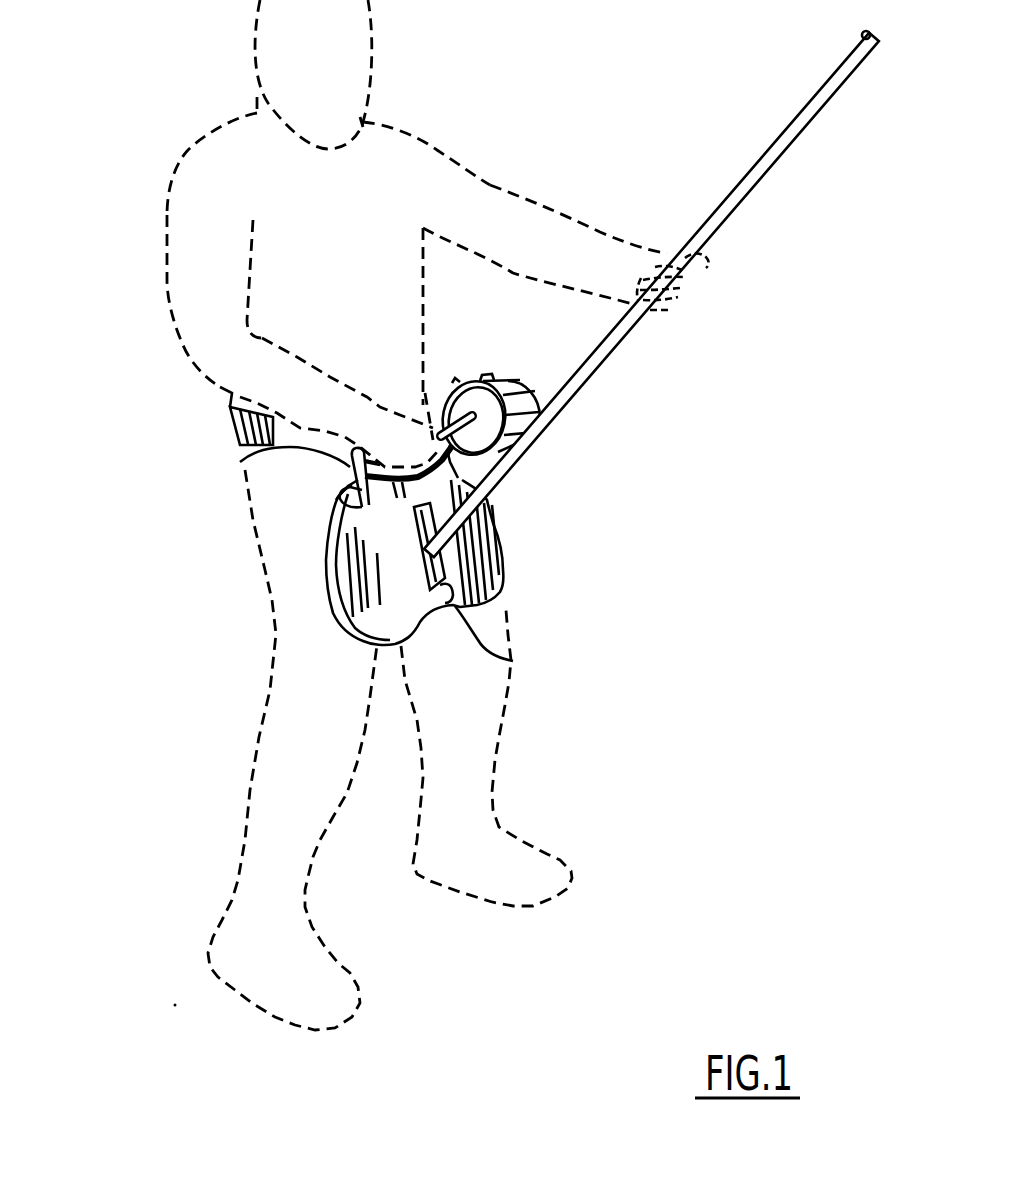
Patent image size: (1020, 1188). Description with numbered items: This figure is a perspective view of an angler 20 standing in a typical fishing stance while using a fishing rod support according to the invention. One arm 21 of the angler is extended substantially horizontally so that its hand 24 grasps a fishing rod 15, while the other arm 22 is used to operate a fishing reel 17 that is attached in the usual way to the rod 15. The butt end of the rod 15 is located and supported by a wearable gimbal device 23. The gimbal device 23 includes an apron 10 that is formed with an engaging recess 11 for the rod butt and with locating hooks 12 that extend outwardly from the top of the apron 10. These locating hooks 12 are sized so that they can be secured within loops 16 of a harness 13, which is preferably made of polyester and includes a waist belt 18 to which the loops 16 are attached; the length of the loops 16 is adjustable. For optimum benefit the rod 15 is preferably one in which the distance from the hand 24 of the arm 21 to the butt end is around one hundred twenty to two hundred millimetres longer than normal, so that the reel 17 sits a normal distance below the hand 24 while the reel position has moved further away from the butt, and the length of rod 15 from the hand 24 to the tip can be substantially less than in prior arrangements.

The apron 10 is at (490, 562).
The engaging recess 11 is at (513, 661).
The locating hooks 12 is at (355, 493).
The harness 13 is at (213, 471).
The fishing rod 15 is at (760, 170).
The loops 16 is at (348, 468).
The fishing reel 17 is at (518, 377).
The waist belt 18 is at (240, 463).
The angler 20 is at (213, 223).
The arm 21 is at (515, 227).
The arm 22 is at (227, 360).
The gimbal device 23 is at (519, 521).
The hand 24 is at (687, 283).